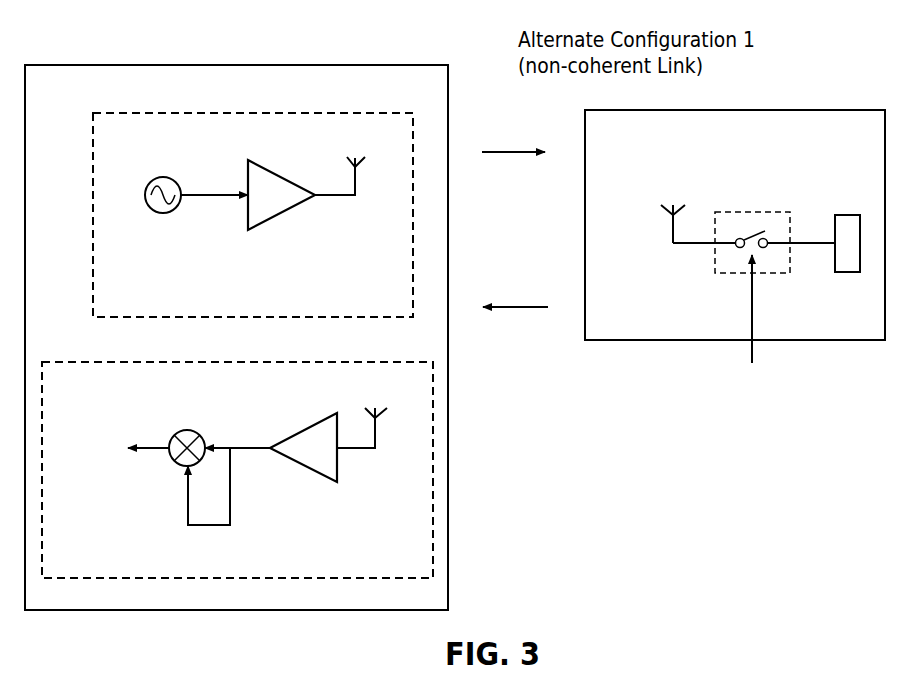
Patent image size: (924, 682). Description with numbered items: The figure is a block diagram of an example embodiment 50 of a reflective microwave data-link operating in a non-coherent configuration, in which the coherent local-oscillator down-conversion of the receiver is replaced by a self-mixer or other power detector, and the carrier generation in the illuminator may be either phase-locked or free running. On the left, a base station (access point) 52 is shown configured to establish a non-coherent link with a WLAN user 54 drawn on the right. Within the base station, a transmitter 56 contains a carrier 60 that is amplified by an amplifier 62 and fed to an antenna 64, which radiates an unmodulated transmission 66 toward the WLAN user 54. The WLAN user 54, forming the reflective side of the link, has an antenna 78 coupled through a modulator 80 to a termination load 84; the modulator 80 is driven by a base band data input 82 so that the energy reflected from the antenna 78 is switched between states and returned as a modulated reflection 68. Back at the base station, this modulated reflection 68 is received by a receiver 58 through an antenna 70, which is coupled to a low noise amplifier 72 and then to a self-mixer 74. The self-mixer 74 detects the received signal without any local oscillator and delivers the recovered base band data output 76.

The example embodiment 50 is at (107, 33).
The base station (access point) 52 is at (317, 65).
The WLAN user 54 is at (777, 110).
The transmitter 56 is at (307, 320).
The receiver 58 is at (95, 358).
The carrier 60 is at (163, 213).
The amplifier 62 is at (285, 213).
The antenna 64 is at (343, 197).
The unmodulated transmission 66 is at (500, 148).
The modulated reflection 68 is at (510, 307).
The antenna 70 is at (358, 450).
The low noise amplifier 72 is at (308, 470).
The self-mixer 74 is at (207, 435).
The base band data output 76 is at (155, 446).
The antenna 78 is at (670, 228).
The modulator 80 is at (718, 277).
The base band data input 82 is at (808, 383).
The termination load 84 is at (847, 273).